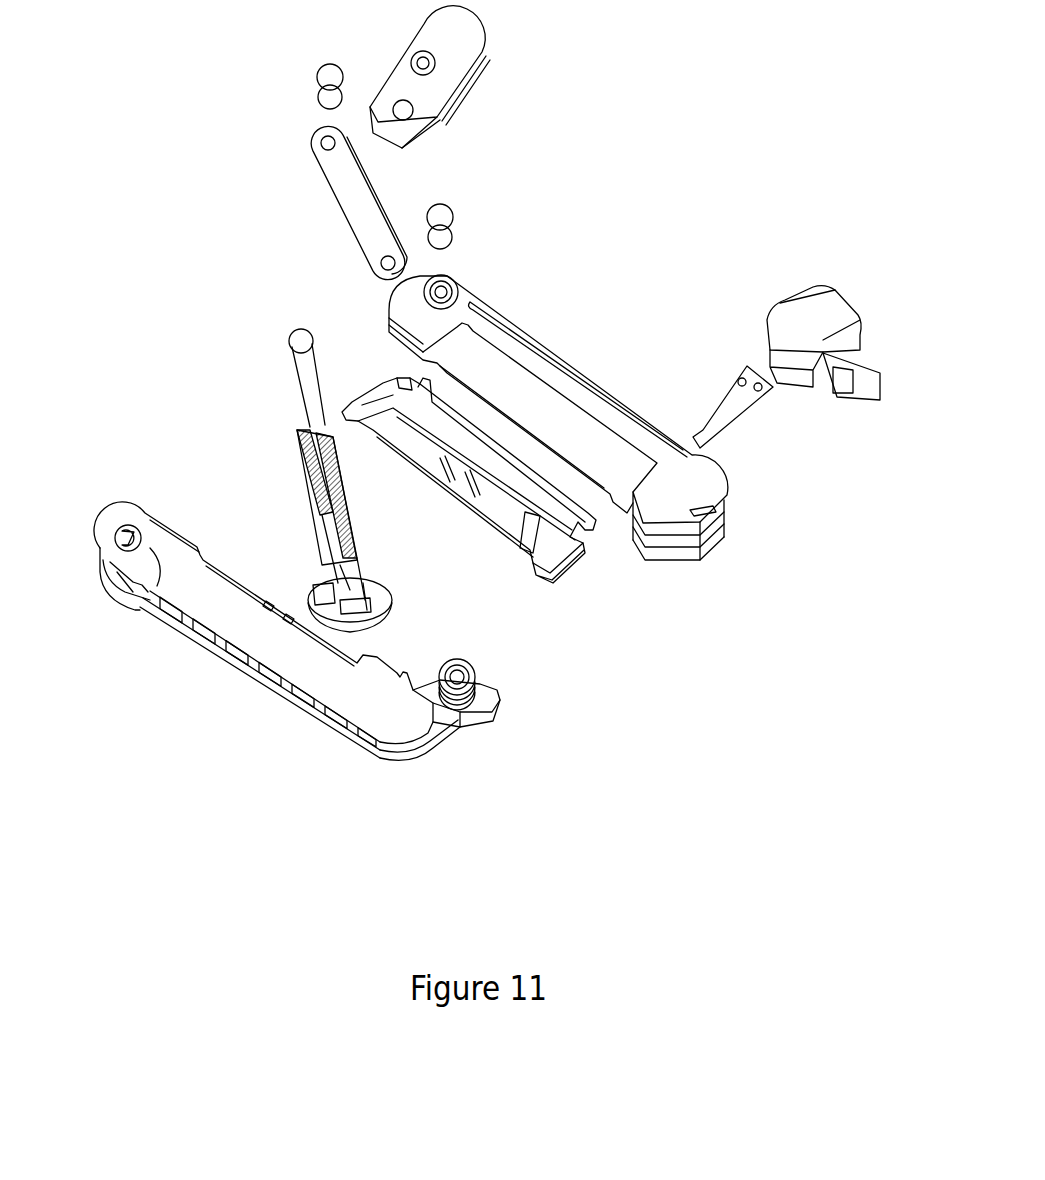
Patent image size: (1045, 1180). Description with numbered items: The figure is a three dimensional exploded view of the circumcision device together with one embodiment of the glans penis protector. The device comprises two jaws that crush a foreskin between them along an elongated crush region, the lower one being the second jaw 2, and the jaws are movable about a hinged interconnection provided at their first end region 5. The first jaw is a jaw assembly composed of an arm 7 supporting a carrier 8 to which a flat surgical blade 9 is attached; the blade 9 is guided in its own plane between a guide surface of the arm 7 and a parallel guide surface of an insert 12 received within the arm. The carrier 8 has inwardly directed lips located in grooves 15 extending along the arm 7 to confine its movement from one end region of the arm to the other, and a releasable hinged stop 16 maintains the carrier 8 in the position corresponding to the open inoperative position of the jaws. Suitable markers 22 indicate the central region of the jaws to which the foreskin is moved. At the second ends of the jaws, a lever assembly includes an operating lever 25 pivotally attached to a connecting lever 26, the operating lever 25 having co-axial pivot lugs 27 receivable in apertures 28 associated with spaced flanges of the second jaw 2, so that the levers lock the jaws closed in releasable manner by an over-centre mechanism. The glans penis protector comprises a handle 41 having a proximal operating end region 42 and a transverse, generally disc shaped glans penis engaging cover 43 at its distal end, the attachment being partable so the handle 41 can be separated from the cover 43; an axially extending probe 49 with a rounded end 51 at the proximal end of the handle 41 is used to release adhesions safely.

The second jaw 2 is at (280, 637).
The first end region 5 is at (690, 507).
The arm 7 is at (523, 333).
The carrier 8 is at (800, 333).
The flat surgical blade 9 is at (713, 413).
The insert 12 is at (493, 463).
The grooves 15 is at (617, 407).
The releasable hinged stop 16 is at (847, 380).
The markers 22 is at (477, 477).
The operating lever 25 is at (455, 40).
The connecting lever 26 is at (360, 215).
The co-axial pivot lugs 27 is at (400, 113).
The apertures 28 is at (117, 570).
The handle 41 is at (310, 500).
The proximal operating end region 42 is at (310, 423).
The glans penis engaging cover 43 is at (323, 602).
The probe 49 is at (310, 380).
The rounded end 51 is at (297, 338).